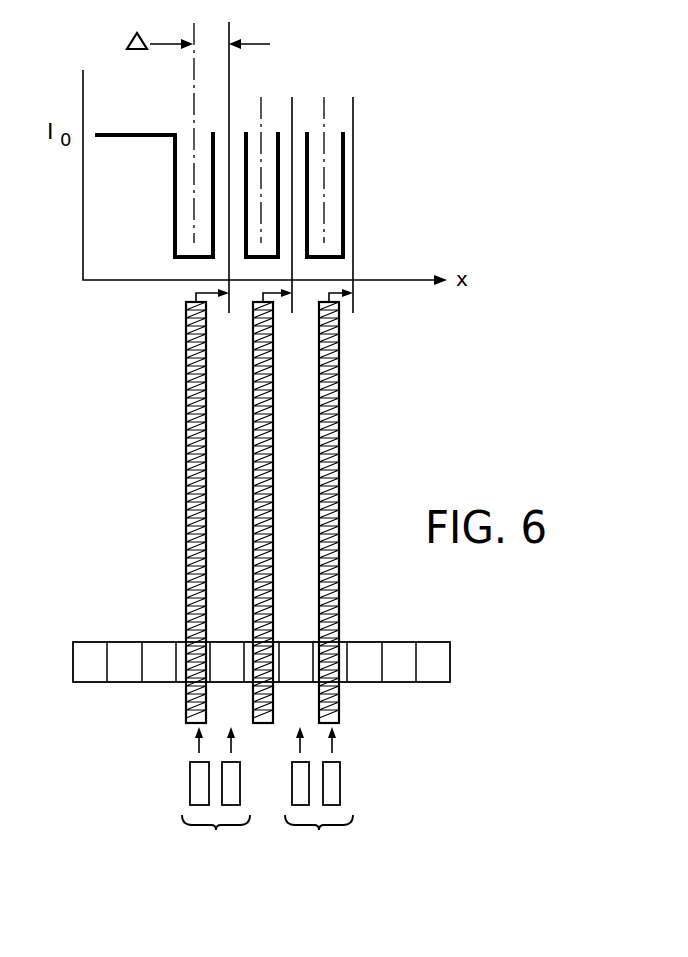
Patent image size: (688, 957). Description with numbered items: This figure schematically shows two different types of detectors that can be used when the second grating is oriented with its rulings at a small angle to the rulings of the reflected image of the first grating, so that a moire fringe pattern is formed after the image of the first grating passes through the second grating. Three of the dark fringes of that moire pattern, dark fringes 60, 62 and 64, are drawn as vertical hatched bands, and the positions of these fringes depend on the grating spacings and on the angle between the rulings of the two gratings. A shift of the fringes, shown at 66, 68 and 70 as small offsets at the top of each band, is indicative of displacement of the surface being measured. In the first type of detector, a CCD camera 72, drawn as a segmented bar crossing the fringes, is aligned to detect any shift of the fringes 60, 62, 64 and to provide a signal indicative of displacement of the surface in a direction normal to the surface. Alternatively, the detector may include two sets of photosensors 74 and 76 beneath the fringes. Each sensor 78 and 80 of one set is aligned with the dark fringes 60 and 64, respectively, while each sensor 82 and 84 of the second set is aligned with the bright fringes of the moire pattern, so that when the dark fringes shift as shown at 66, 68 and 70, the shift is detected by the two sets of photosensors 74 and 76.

The dark fringe 60 is at (190, 552).
The dark fringe 62 is at (255, 542).
The dark fringe 64 is at (320, 540).
The fringe shift 66 is at (207, 300).
The fringe shift 68 is at (273, 300).
The fringe shift 70 is at (338, 300).
The CCD camera 72 is at (450, 660).
The first set of photosensors 74 is at (216, 840).
The second set of photosensors 76 is at (319, 840).
The photosensor 78 is at (190, 782).
The photosensor 80 is at (292, 790).
The photosensor 82 is at (240, 783).
The photosensor 84 is at (340, 785).